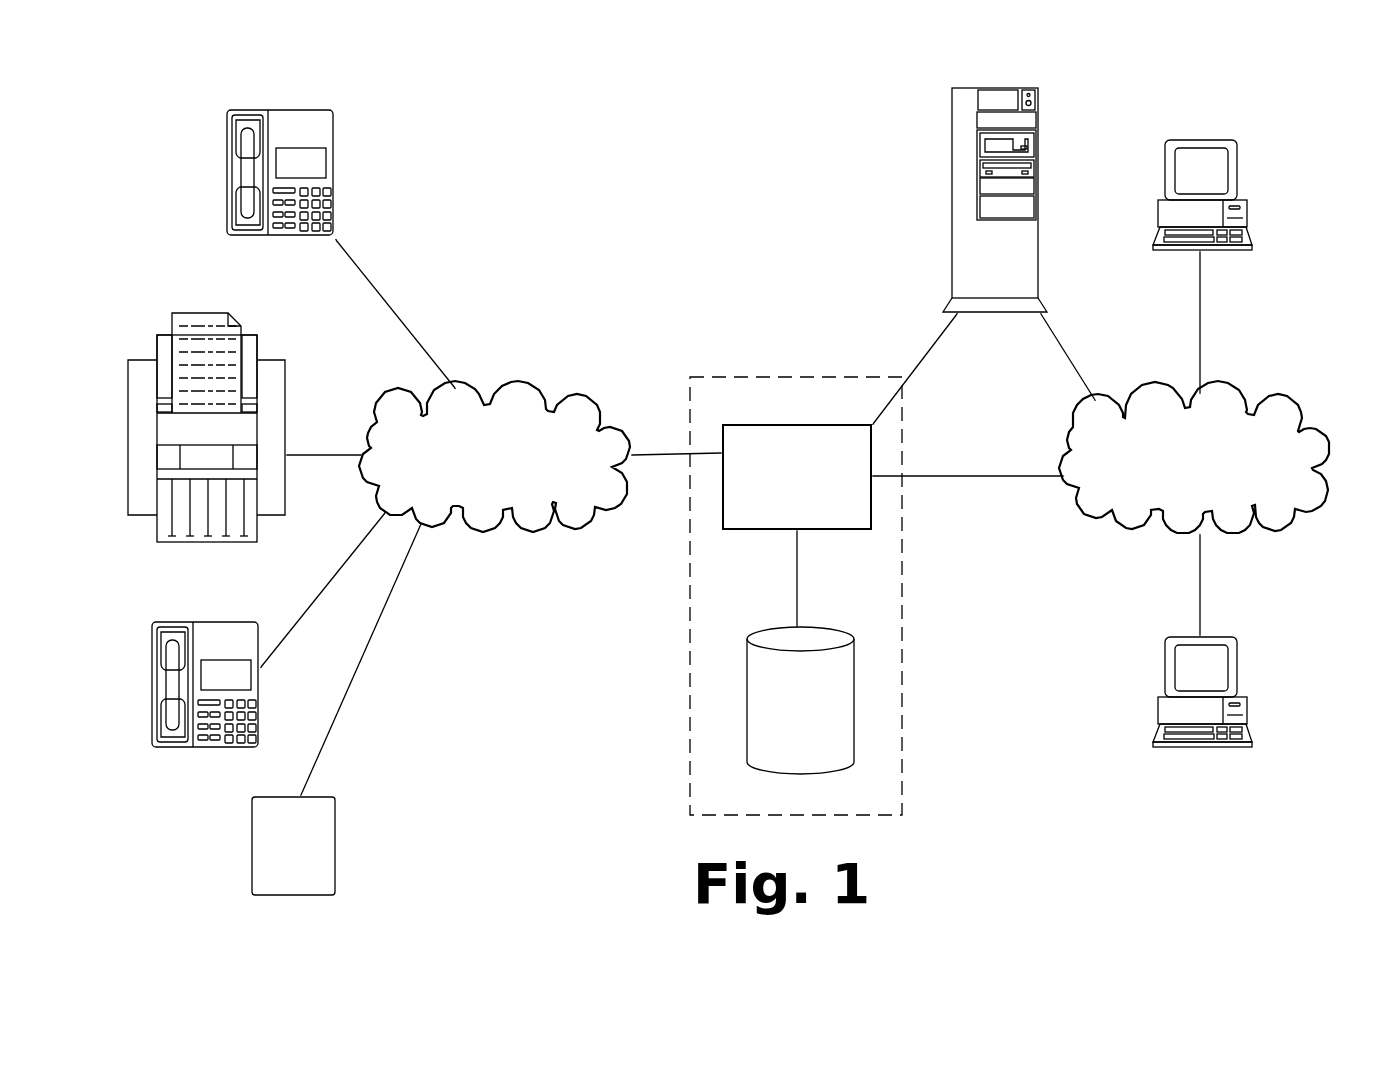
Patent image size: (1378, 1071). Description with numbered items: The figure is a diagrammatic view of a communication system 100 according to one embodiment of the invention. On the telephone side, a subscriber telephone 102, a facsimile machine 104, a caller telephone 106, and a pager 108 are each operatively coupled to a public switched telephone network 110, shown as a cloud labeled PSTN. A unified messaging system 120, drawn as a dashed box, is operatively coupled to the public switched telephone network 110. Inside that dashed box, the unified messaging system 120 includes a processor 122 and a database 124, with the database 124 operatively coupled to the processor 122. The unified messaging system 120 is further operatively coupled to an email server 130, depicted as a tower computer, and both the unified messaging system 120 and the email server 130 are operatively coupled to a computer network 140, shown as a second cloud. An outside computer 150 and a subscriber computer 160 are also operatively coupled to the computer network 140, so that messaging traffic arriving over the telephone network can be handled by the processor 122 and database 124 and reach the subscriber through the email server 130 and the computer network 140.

The communication system 100 is at (1236, 94).
The subscriber telephone 102 is at (333, 128).
The facsimile machine 104 is at (276, 362).
The caller telephone 106 is at (212, 622).
The pager 108 is at (335, 852).
The public switched telephone network 110 is at (590, 395).
The unified messaging system 120 is at (725, 377).
The processor 122 is at (795, 424).
The database 124 is at (855, 712).
The email server 130 is at (952, 148).
The computer network 140 is at (1300, 413).
The outside computer 150 is at (1165, 680).
The subscriber computer 160 is at (1237, 185).